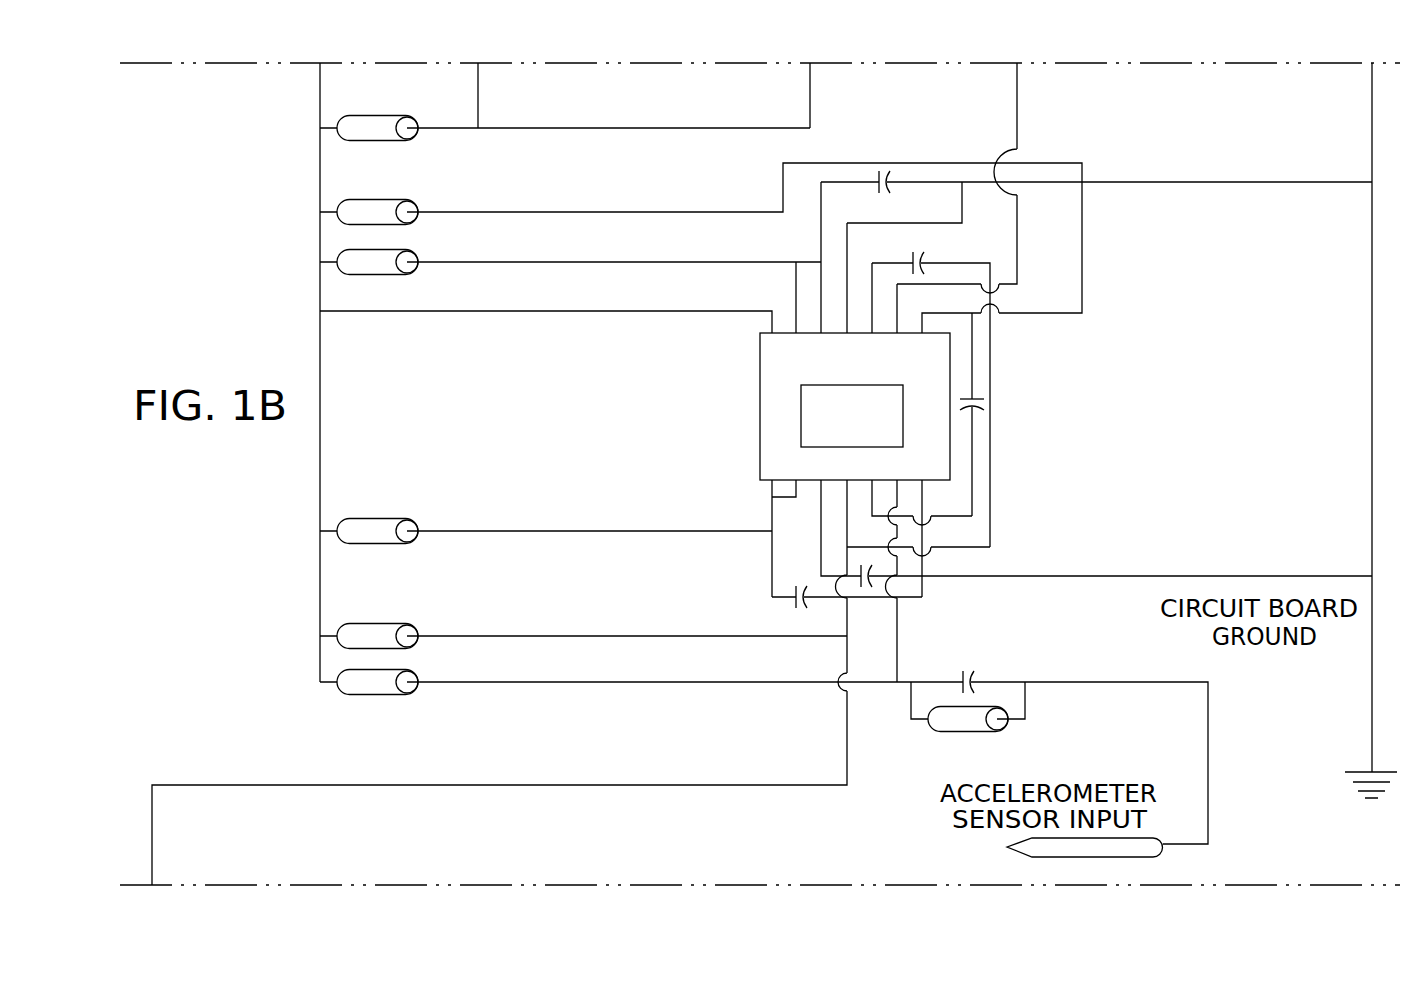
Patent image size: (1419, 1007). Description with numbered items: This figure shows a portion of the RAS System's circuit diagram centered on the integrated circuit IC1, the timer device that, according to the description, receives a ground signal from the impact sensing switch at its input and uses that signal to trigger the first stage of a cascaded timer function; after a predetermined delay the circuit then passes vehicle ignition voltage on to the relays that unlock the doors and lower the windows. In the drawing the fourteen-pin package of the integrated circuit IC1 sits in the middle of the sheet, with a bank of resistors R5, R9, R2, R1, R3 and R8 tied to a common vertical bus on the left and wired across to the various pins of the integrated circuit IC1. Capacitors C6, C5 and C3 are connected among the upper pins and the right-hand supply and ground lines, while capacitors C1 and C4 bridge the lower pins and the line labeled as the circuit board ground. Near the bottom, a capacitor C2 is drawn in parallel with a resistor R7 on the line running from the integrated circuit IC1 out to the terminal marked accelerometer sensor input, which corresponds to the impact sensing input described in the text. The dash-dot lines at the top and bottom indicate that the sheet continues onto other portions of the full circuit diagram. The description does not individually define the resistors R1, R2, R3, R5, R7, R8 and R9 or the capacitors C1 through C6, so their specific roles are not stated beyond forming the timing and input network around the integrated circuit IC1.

The resistor R1 is at (377, 517).
The resistor R2 is at (377, 249).
The resistor R3 is at (377, 622).
The resistor R5 is at (377, 114).
The resistor R7 is at (968, 737).
The resistor R8 is at (377, 698).
The resistor R9 is at (377, 197).
The capacitor C1 is at (801, 611).
The capacitor C2 is at (968, 666).
The capacitor C3 is at (996, 406).
The capacitor C4 is at (868, 597).
The capacitor C5 is at (939, 255).
The capacitor C6 is at (906, 193).
The integrated circuit IC1 is at (855, 406).